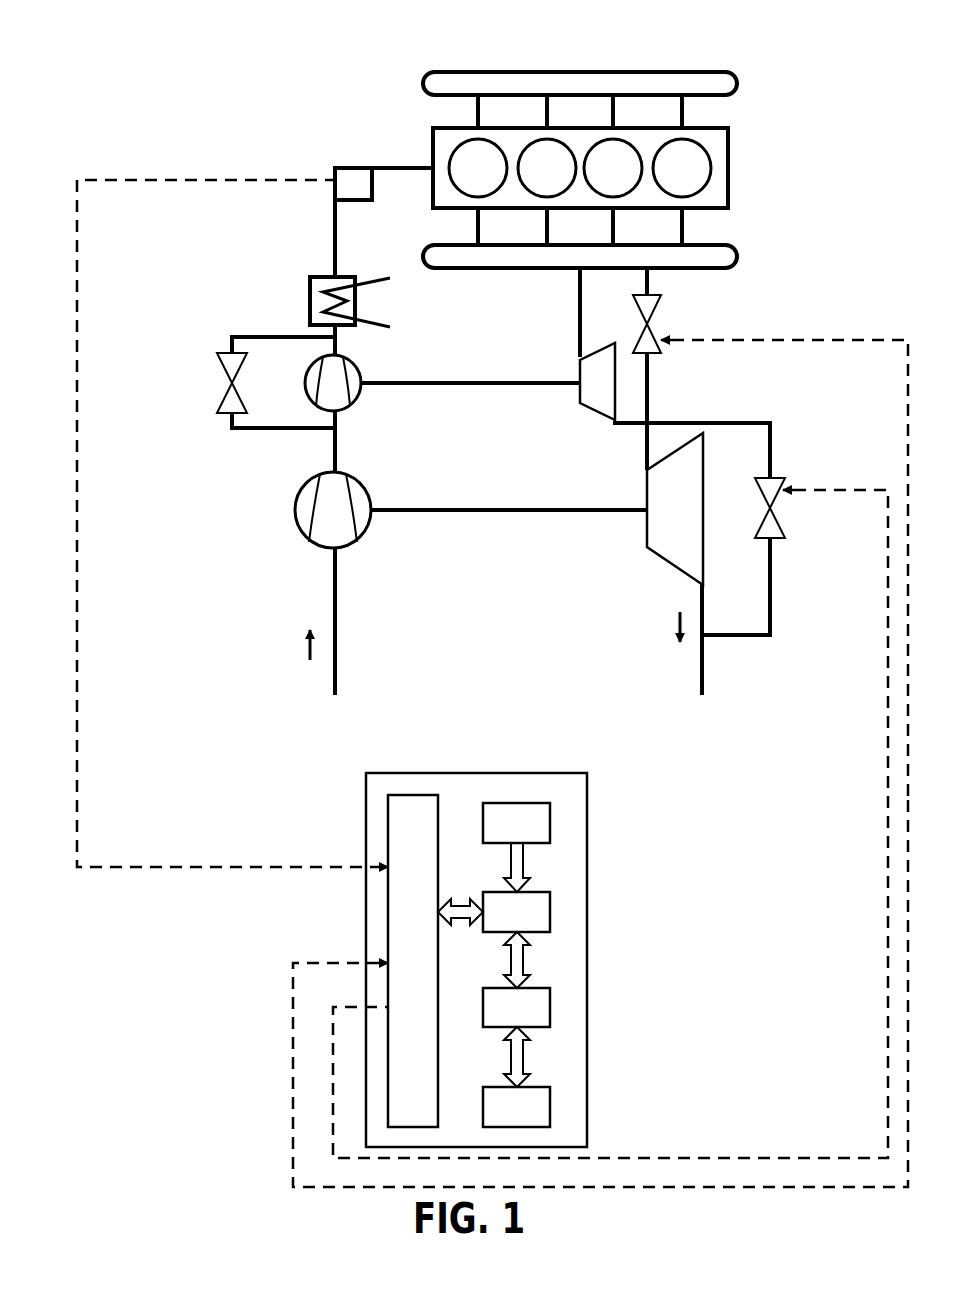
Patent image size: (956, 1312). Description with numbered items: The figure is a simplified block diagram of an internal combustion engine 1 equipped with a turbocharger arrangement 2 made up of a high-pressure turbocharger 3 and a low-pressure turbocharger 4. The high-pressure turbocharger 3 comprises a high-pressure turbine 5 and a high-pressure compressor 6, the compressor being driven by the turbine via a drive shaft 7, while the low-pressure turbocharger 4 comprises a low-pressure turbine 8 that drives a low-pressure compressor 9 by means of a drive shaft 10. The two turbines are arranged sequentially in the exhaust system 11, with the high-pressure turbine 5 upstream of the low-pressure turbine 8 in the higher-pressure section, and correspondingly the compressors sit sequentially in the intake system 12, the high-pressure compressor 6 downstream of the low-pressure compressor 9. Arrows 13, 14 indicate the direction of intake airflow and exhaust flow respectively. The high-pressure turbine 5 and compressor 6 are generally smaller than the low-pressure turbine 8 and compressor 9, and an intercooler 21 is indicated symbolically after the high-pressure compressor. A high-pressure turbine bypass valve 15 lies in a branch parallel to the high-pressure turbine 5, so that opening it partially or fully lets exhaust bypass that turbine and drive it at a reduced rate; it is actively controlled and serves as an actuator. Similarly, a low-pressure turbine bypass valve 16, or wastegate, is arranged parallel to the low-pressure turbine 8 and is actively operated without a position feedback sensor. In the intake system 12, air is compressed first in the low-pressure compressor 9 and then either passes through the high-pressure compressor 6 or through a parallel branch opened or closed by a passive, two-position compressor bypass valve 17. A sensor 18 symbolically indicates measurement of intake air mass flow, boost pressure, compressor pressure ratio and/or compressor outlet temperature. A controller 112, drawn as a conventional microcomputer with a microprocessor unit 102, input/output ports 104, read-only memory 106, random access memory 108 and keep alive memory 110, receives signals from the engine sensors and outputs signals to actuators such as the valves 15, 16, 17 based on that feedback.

The internal combustion engine 1 is at (815, 69).
The turbocharger arrangement 2 is at (808, 375).
The high-pressure turbocharger 3 is at (196, 310).
The low-pressure turbocharger 4 is at (210, 491).
The high-pressure turbine 5 is at (585, 365).
The high-pressure compressor 6 is at (358, 368).
The drive shaft 7 is at (483, 385).
The low-pressure turbine 8 is at (665, 535).
The low-pressure compressor 9 is at (338, 535).
The drive shaft 10 is at (553, 513).
The exhaust system 11 is at (748, 703).
The intake system 12 is at (268, 733).
The arrow 13 is at (305, 648).
The arrow 14 is at (650, 643).
The high-pressure turbine bypass valve 15 is at (655, 312).
The low-pressure turbine bypass valve 16 is at (780, 540).
The compressor bypass valve 17 is at (230, 365).
The sensor 18 is at (350, 177).
The intercooler 21 is at (312, 287).
The microprocessor unit 102 is at (552, 905).
The input/output ports 104 is at (440, 802).
The read-only memory 106 is at (552, 820).
The random access memory 108 is at (552, 1005).
The keep alive memory 110 is at (552, 1105).
The controller 112 is at (572, 773).